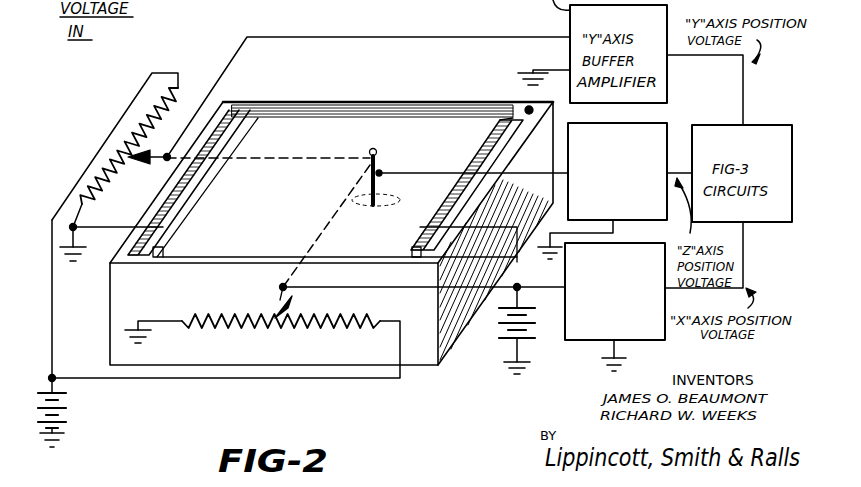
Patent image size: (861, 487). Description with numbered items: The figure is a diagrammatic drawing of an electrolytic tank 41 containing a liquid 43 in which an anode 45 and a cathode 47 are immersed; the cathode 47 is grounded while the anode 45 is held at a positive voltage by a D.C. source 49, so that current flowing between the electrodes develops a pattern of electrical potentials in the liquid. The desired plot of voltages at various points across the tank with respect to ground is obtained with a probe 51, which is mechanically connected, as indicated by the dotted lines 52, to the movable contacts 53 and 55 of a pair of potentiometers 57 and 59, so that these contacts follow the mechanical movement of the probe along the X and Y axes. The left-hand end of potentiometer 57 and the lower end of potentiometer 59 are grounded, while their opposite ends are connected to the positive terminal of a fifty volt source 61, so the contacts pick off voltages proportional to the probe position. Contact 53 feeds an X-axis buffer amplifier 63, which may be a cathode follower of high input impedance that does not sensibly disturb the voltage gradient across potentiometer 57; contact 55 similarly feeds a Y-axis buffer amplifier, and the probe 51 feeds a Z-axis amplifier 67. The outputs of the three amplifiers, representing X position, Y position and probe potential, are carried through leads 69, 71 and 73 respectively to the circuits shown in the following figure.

The electrolytic tank 41 is at (427, 367).
The liquid 43 is at (254, 236).
The anode 45 is at (490, 130).
The cathode 47 is at (247, 123).
The D.C. source 49 is at (498, 326).
The probe 51 is at (380, 156).
The dotted lines 52 is at (296, 160).
The movable contact 53 is at (276, 300).
The movable contact 55 is at (150, 160).
The potentiometer 57 is at (314, 328).
The potentiometer 59 is at (96, 197).
The 50 v. source 61 is at (65, 398).
The X-axis buffer amplifier 63 is at (586, 338).
The Z-axis amplifier 67 is at (665, 127).
The lead 69 is at (743, 248).
The lead 71 is at (743, 90).
The lead 73 is at (684, 172).